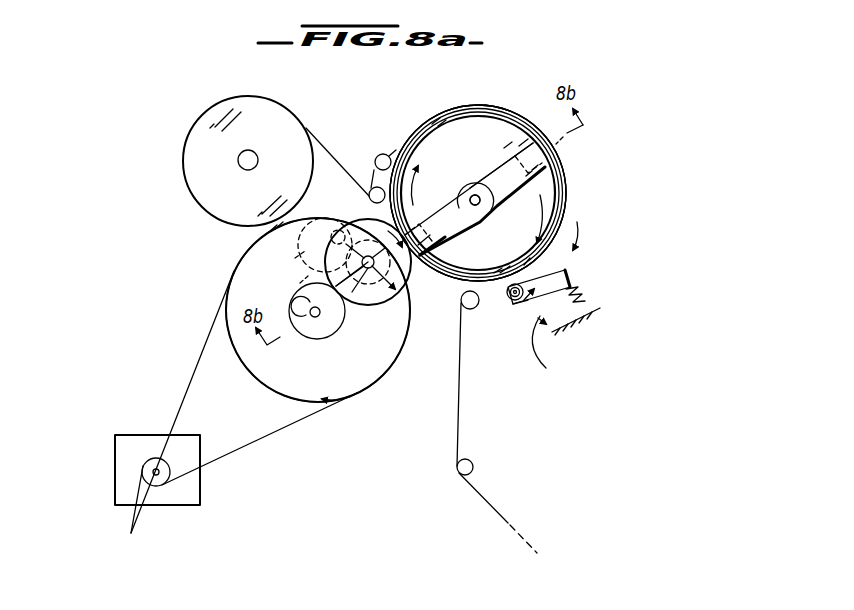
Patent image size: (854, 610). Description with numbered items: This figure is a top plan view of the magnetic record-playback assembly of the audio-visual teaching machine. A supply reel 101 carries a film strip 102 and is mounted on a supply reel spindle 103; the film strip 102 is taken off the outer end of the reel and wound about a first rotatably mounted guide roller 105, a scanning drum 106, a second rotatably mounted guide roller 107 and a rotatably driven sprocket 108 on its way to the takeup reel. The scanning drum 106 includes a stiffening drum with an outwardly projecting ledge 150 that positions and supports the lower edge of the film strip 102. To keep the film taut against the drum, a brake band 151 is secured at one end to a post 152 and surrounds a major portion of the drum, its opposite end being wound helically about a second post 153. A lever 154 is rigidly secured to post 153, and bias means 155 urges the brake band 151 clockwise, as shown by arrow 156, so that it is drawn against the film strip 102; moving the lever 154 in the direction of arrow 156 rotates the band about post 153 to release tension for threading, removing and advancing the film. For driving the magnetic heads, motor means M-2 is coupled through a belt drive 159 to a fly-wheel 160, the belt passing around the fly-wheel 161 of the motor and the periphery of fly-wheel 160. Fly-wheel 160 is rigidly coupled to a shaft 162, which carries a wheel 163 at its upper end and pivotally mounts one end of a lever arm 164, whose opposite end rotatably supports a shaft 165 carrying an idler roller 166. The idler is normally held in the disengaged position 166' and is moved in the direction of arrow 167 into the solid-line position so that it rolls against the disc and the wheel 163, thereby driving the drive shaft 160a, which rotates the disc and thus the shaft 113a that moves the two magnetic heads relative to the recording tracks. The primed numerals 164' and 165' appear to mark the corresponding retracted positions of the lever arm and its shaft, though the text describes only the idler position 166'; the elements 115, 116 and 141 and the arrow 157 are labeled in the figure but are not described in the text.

The supply reel 101 is at (240, 201).
The film strip 102 is at (320, 141).
The supply reel spindle 103 is at (256, 153).
The first rotatably mounted guide roller 105 is at (372, 186).
The scanning drum 106 is at (575, 177).
The second rotatably mounted guide roller 107 is at (474, 310).
The rotatably driven sprocket 108 is at (473, 470).
The shaft 113a is at (476, 205).
The clamp bar 115 is at (428, 253).
The clamp bar 116 is at (527, 148).
The clamp arm 141 is at (492, 166).
The ledge 150 is at (438, 196).
The brake band 151 is at (480, 104).
The post 152 is at (386, 154).
The second post 153 is at (508, 297).
The lever 154 is at (572, 276).
The bias means 155 is at (588, 297).
The arrow 156 is at (528, 305).
The latch motion 157 is at (554, 347).
The belt drive 159 is at (207, 342).
The fly-wheel 160 is at (380, 389).
The drive shaft 160a is at (162, 460).
The fly-wheel of motor 161 is at (131, 533).
The shaft 162 is at (320, 322).
The wheel 163 is at (306, 338).
The lever arm 164 is at (365, 309).
The crank arm alternate position 164' is at (279, 285).
The shaft 165 is at (386, 262).
The planet gear alternate position 165' is at (324, 245).
The idler roller 166 is at (337, 310).
The disengaged position 166' is at (277, 260).
The arrow 167 is at (356, 292).
The motor means M-2 is at (115, 472).